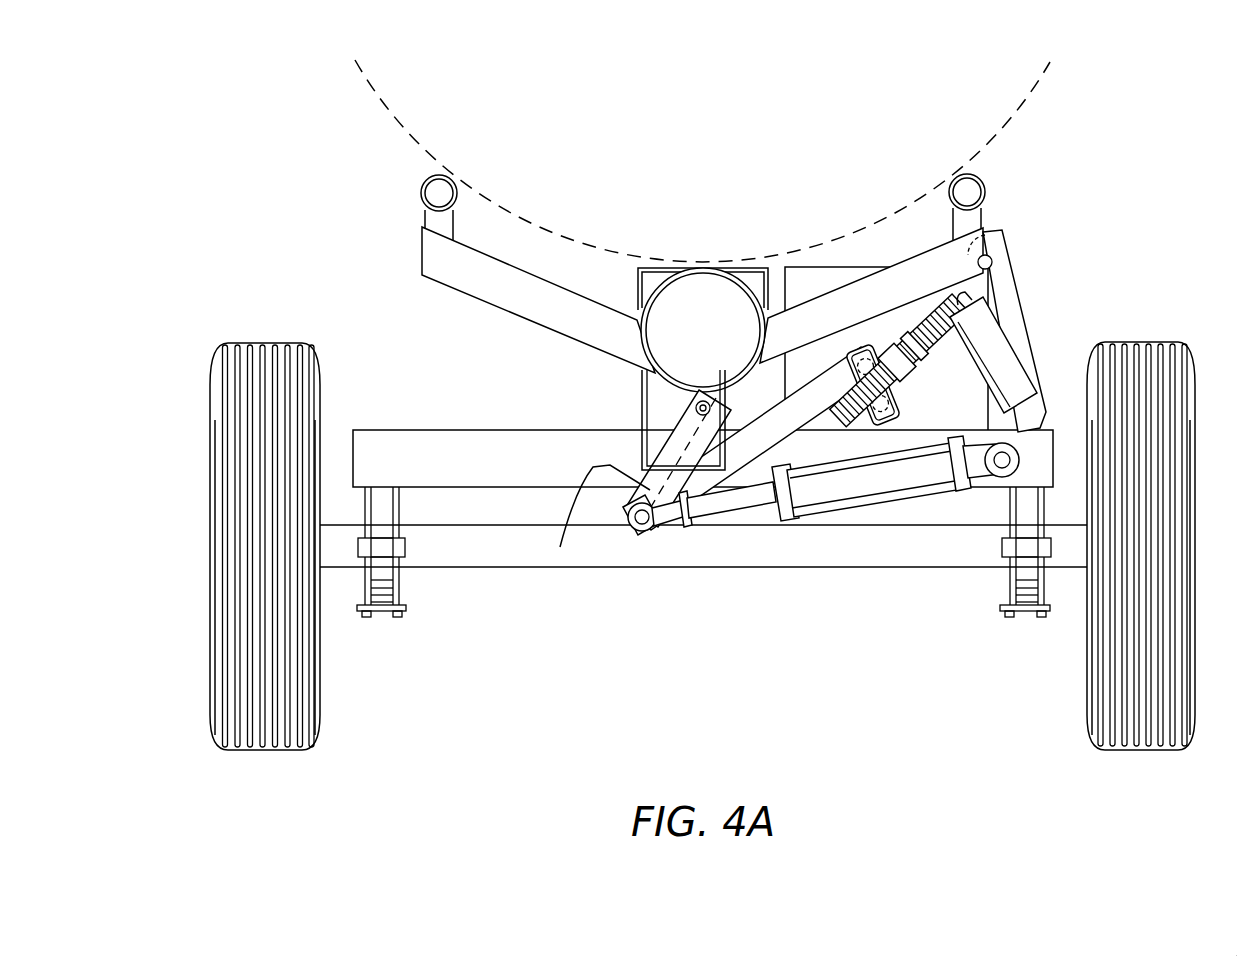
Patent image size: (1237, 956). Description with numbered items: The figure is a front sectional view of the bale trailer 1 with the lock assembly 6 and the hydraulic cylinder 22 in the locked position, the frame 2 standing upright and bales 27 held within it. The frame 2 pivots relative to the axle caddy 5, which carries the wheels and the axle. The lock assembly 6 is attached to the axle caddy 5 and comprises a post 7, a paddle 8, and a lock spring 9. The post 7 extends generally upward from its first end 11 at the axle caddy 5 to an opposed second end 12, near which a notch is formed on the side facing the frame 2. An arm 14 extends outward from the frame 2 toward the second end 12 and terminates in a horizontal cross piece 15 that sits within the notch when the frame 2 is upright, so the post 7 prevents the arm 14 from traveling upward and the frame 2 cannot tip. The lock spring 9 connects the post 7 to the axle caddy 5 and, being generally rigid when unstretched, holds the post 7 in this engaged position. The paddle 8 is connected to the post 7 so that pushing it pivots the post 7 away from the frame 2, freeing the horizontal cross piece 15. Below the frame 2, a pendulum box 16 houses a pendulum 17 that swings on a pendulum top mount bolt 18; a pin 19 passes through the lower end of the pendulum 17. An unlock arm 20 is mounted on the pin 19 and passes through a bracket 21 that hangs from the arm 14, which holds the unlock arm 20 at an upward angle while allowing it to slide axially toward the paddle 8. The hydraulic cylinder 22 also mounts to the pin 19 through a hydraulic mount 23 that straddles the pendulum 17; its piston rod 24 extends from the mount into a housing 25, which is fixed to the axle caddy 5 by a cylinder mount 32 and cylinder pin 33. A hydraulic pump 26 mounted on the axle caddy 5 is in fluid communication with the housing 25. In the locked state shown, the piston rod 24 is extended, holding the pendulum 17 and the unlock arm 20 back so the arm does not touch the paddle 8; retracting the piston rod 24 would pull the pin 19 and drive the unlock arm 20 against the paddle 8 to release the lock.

The bale trailer 1 is at (253, 177).
The frame 2 is at (640, 335).
The axle caddy 5 is at (515, 468).
The lock assembly 6 is at (1039, 288).
The post 7 is at (1020, 265).
The paddle 8 is at (1020, 326).
The lock spring 9 is at (920, 350).
The first end 11 is at (1020, 368).
The opposed second end 12 is at (1000, 245).
The arm 14 is at (872, 290).
The horizontal cross piece 15 is at (958, 300).
The pendulum box 16 is at (683, 437).
The pendulum 17 is at (560, 547).
The pendulum top mount bolt 18 is at (705, 398).
The pin 19 is at (650, 528).
The unlock arm 20 is at (738, 463).
The bracket 21 is at (862, 362).
The hydraulic cylinder 22 is at (833, 538).
The hydraulic mount 23 is at (676, 522).
The piston rod 24 is at (733, 503).
The housing 25 is at (873, 480).
The hydraulic pump 26 is at (955, 414).
The bales 27 is at (548, 139).
The cylinder mount 32 is at (1028, 470).
The cylinder pin 33 is at (1000, 470).